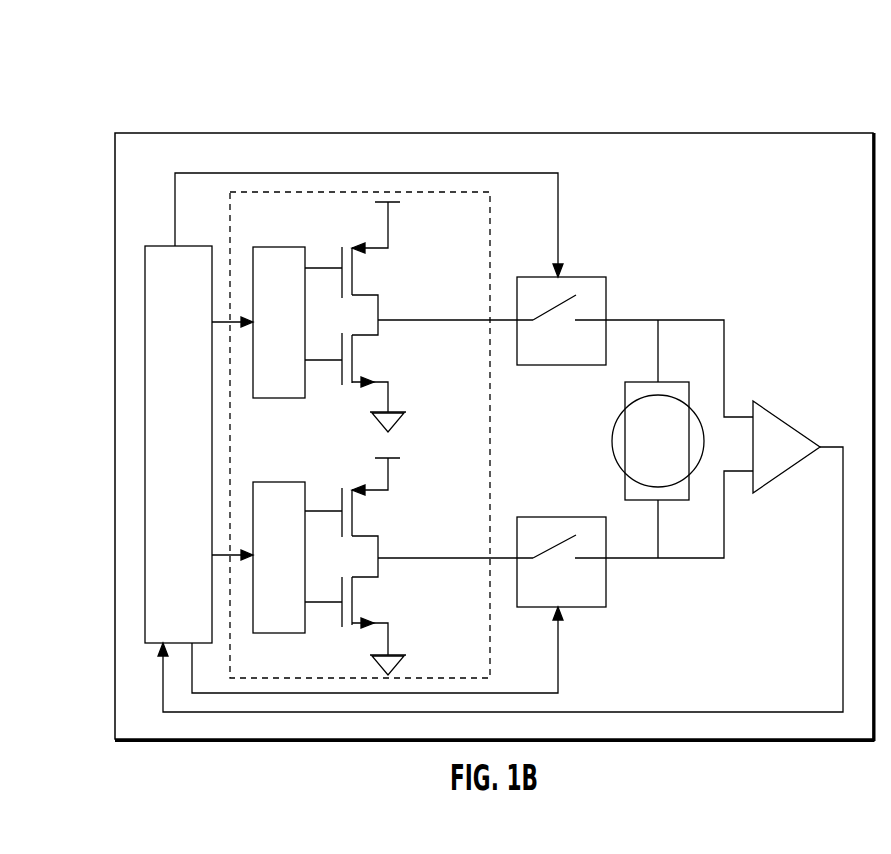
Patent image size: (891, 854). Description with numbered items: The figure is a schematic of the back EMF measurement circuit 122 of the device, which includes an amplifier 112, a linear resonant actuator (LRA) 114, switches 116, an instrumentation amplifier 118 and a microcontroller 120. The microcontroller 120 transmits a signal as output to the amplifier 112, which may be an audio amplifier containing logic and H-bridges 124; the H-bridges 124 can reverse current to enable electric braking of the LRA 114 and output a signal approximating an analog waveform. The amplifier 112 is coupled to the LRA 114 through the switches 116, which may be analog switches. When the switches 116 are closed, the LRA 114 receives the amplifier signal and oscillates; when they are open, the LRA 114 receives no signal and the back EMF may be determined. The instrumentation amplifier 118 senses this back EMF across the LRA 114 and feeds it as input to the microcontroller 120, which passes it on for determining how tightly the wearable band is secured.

The amplifier 112 is at (373, 370).
The linear resonant actuator (LRA) 114 is at (672, 462).
The switches 116 is at (600, 276).
The instrumentation amplifier 118 is at (780, 418).
The microcontroller 120 is at (143, 393).
The back EMF measurement circuit 122 is at (192, 131).
The H-bridges 124 is at (380, 302).